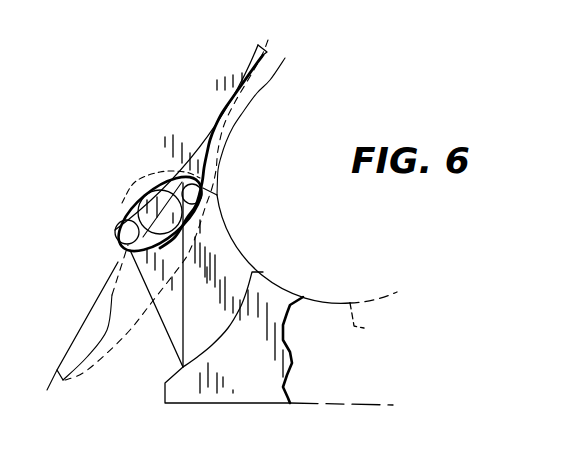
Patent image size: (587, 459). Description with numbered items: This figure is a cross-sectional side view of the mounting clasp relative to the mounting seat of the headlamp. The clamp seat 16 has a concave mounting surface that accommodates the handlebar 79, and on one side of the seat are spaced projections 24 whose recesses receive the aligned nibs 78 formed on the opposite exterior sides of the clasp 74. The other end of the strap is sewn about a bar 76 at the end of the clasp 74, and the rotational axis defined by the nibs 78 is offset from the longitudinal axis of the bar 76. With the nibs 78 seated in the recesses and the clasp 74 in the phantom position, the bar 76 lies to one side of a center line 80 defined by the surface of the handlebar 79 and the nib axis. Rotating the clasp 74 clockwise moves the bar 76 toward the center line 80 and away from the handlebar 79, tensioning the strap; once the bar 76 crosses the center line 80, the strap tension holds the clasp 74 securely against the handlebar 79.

The clamp seat 16 is at (263, 393).
The projections 24 is at (227, 257).
The clasp 74 is at (205, 106).
The bar 76 is at (114, 231).
The nibs 78 is at (147, 210).
The handlebar 79 is at (367, 328).
The center line 80 is at (118, 262).